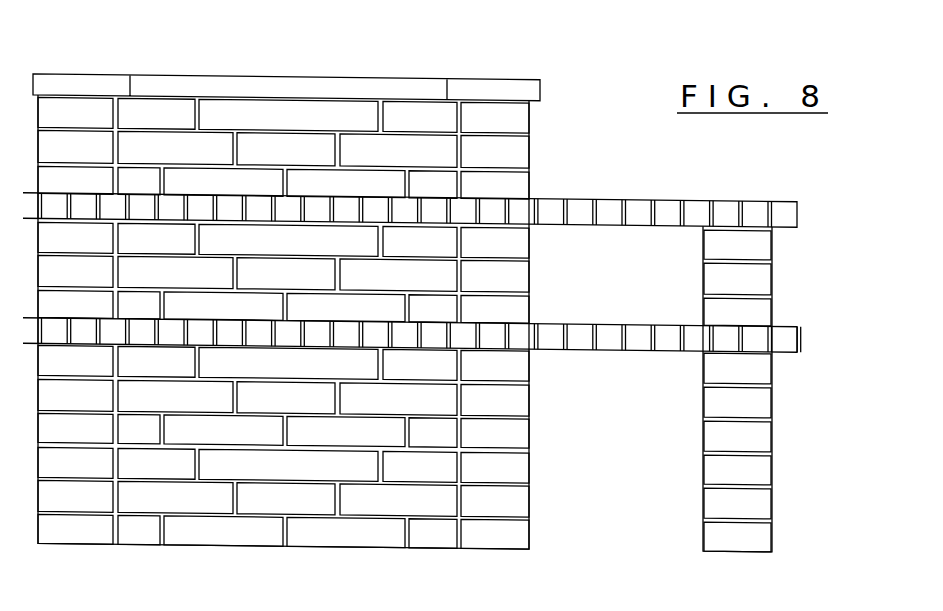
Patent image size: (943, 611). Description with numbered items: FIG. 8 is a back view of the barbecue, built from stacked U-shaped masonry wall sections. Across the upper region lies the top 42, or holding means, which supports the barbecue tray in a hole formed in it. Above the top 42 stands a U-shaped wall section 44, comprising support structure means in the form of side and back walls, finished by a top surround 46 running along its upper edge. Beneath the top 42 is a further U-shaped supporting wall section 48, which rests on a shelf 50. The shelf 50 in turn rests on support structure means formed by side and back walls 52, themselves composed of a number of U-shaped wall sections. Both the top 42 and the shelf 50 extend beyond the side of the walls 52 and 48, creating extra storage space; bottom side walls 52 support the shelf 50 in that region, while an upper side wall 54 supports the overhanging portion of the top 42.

The top 42 is at (782, 206).
The U-shaped wall section 44 is at (518, 141).
The top surround 46 is at (522, 81).
The further U-shaped supporting wall section 48 is at (505, 273).
The shelf 50 is at (782, 333).
The side and back walls 52 is at (517, 426).
The upper side wall 54 is at (757, 272).